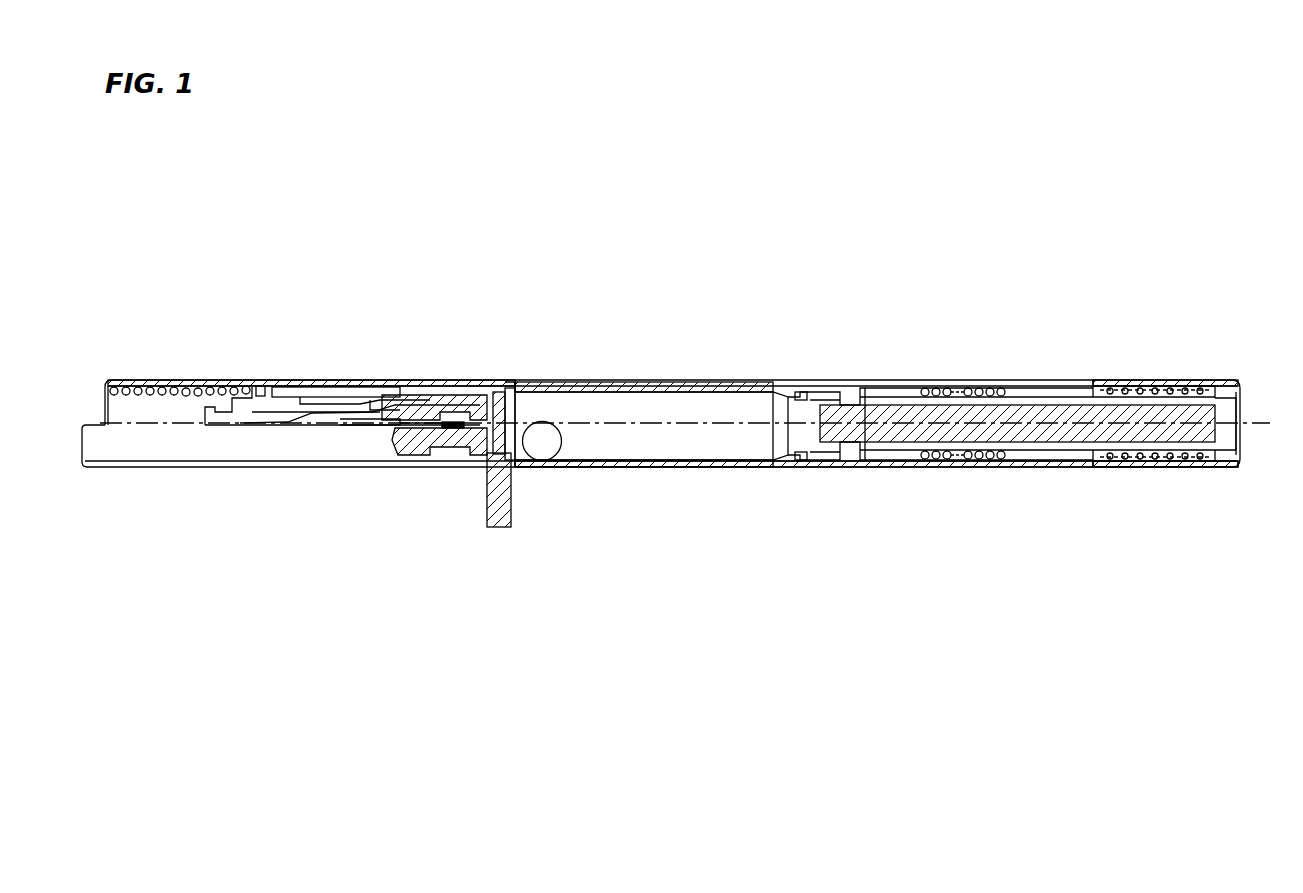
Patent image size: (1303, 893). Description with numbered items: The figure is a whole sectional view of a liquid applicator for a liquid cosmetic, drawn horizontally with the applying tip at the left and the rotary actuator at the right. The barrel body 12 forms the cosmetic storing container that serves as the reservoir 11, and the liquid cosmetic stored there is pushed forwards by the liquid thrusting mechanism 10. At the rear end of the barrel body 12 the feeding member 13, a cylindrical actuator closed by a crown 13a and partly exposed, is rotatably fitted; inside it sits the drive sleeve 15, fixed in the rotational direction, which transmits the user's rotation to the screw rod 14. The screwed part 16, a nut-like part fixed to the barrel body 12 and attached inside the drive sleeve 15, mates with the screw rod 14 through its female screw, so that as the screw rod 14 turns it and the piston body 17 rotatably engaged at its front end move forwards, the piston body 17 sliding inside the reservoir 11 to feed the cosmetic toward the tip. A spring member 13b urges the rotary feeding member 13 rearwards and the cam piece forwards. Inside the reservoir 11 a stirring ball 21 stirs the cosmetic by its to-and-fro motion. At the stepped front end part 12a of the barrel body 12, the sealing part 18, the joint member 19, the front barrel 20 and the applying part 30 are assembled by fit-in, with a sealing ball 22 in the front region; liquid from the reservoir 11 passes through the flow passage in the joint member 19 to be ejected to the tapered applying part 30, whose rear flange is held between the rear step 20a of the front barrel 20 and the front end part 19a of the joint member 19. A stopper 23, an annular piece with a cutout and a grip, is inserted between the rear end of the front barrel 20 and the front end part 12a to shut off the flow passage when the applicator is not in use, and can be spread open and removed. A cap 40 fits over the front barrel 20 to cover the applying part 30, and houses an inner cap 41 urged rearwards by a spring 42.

The liquid thrusting mechanism 10 is at (971, 372).
The reservoir 11 is at (711, 381).
The barrel body 12 is at (661, 468).
The front end part of barrel body 12a is at (497, 384).
The feeding member 13 is at (1207, 382).
The crown 13a is at (1242, 398).
The spring member 13b is at (996, 385).
The screw rod 14 is at (907, 410).
The drive sleeve 15 is at (1113, 400).
The screwed part 16 is at (853, 384).
The piston body 17 is at (789, 383).
The sealing part 18 is at (459, 388).
The joint member 19 is at (406, 388).
The front end part of joint member 19a is at (386, 388).
The front barrel 20 is at (420, 388).
The rear step of front barrel 20a is at (372, 388).
The stirring ball 21 is at (552, 455).
The sealing ball 22 is at (472, 458).
The stopper 23 is at (512, 505).
The applying part 30 is at (266, 388).
The cap 40 is at (177, 384).
The inner cap 41 is at (322, 388).
The spring 42 is at (121, 384).